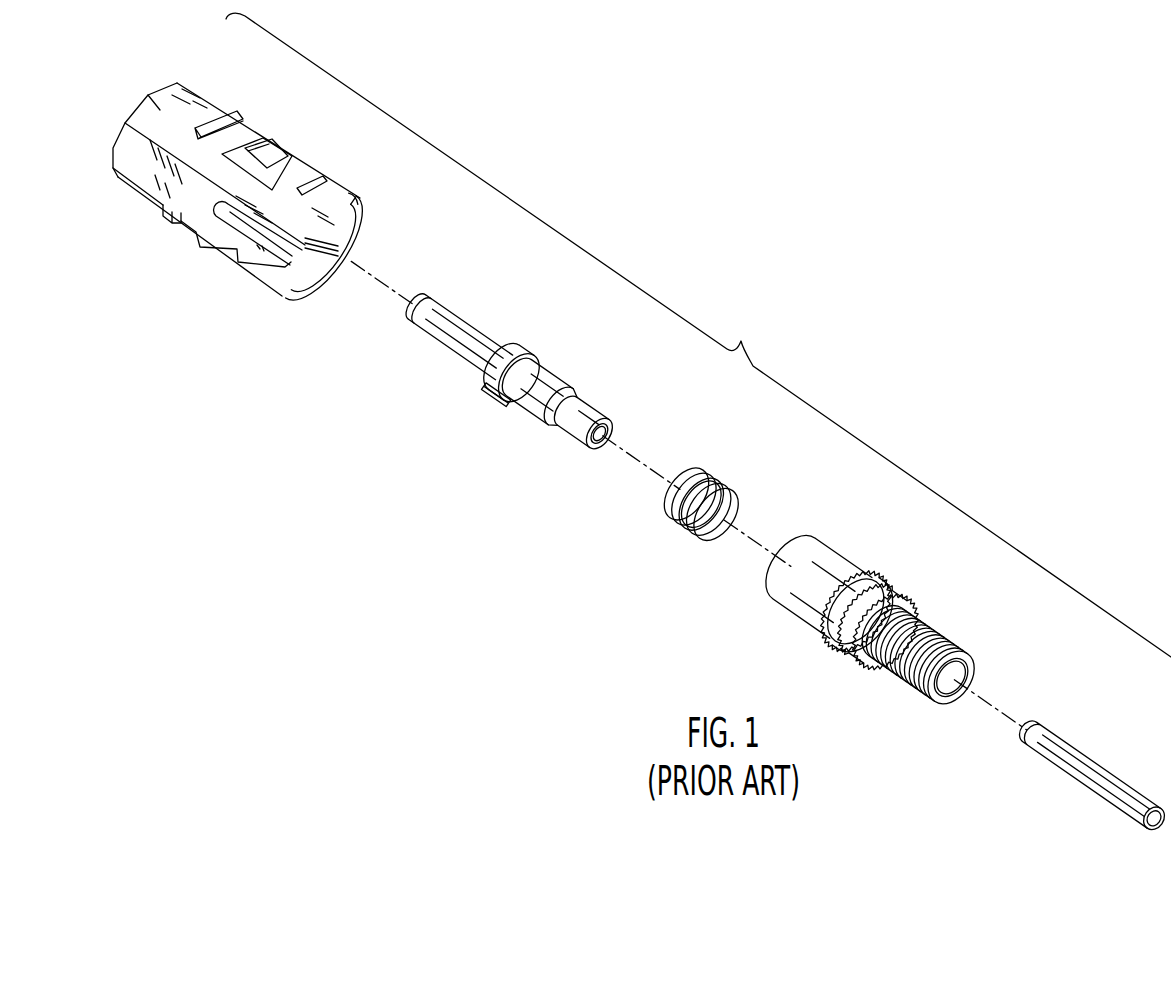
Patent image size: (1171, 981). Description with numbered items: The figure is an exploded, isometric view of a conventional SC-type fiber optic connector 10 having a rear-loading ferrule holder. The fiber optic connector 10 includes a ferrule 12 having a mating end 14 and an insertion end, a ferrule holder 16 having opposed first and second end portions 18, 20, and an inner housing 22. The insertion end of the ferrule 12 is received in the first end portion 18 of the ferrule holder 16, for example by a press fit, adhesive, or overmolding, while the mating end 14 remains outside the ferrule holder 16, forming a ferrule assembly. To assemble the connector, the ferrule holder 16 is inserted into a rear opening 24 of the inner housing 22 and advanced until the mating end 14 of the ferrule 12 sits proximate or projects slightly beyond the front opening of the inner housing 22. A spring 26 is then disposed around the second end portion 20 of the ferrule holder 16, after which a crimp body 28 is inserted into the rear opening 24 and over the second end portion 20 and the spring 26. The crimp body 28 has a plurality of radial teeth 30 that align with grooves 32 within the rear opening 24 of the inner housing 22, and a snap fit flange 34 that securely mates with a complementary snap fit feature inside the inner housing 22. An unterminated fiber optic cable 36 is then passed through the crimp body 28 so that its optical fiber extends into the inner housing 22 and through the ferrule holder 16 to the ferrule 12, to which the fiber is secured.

The fiber optic connector 10 is at (698, 335).
The ferrule 12 is at (468, 315).
The mating end 14 is at (417, 296).
The ferrule holder 16 is at (545, 358).
The first end portion 18 is at (505, 404).
The second end portion 20 is at (580, 447).
The inner housing 22 is at (220, 258).
The rear opening 24 is at (307, 282).
The spring 26 is at (723, 474).
The crimp body 28 is at (837, 548).
The radial teeth 30 is at (847, 655).
The grooves 32 is at (347, 261).
The snap fit flange 34 is at (893, 576).
The fiber optic cable 36 is at (1082, 750).